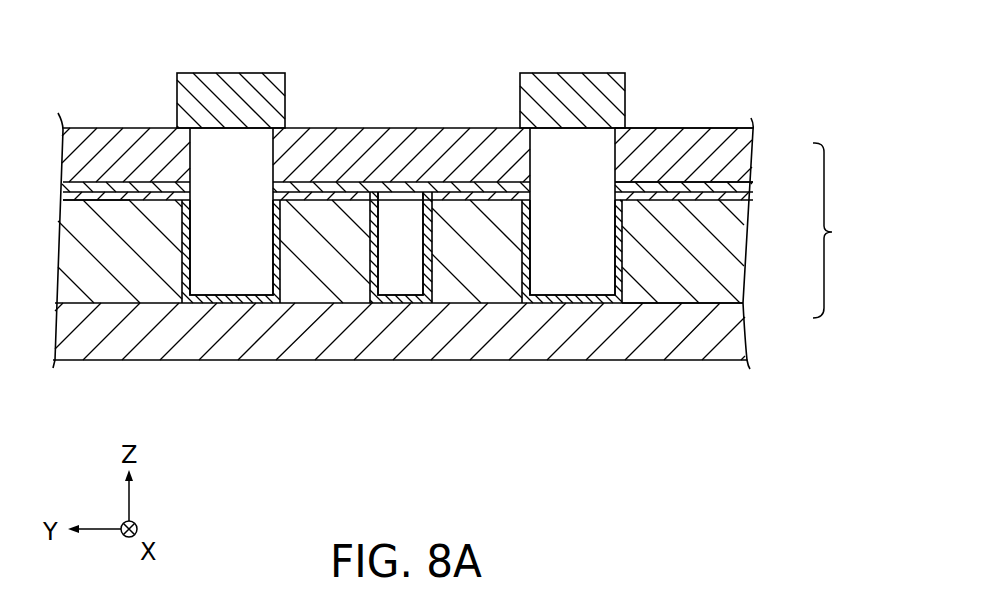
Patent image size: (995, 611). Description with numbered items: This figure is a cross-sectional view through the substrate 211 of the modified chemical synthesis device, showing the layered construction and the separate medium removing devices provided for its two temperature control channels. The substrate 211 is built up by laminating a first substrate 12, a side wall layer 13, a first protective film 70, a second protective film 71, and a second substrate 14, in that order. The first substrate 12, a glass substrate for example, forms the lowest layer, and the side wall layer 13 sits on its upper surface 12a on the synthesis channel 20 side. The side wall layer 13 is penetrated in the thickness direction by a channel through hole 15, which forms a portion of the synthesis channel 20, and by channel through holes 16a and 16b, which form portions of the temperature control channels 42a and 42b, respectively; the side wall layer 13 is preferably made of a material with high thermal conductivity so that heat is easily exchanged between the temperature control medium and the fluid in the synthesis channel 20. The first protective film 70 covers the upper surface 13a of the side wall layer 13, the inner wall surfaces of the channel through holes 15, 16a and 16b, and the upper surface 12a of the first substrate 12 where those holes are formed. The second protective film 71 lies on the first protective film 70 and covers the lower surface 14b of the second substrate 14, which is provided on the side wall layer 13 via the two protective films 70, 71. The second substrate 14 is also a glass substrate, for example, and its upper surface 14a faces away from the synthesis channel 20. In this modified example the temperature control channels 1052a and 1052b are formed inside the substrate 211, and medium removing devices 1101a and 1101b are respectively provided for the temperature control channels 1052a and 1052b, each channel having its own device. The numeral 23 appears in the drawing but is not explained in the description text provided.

The first substrate 12 is at (733, 325).
The upper surface of the first substrate 12a is at (703, 300).
The side wall layer 13 is at (738, 258).
The upper surface of the side wall layer 13a is at (100, 192).
The second substrate 14 is at (745, 152).
The upper surface of the second substrate 14a is at (738, 127).
The lower surface of the second substrate 14b is at (670, 190).
The channel through hole 15 is at (371, 264).
The channel through hole 16a is at (190, 263).
The channel through hole 16b is at (530, 263).
The synthesis channel 20 is at (403, 266).
The via opening 23 is at (432, 306).
The temperature control channel 42a is at (248, 266).
The temperature control channel 42b is at (589, 266).
The first protective film 70 is at (748, 196).
The second protective film 71 is at (748, 186).
The substrate 211 is at (845, 230).
The temperature control channel 1052a is at (280, 326).
The temperature control channel 1052b is at (621, 326).
The medium removing device 1101a is at (233, 88).
The medium removing device 1101b is at (573, 88).